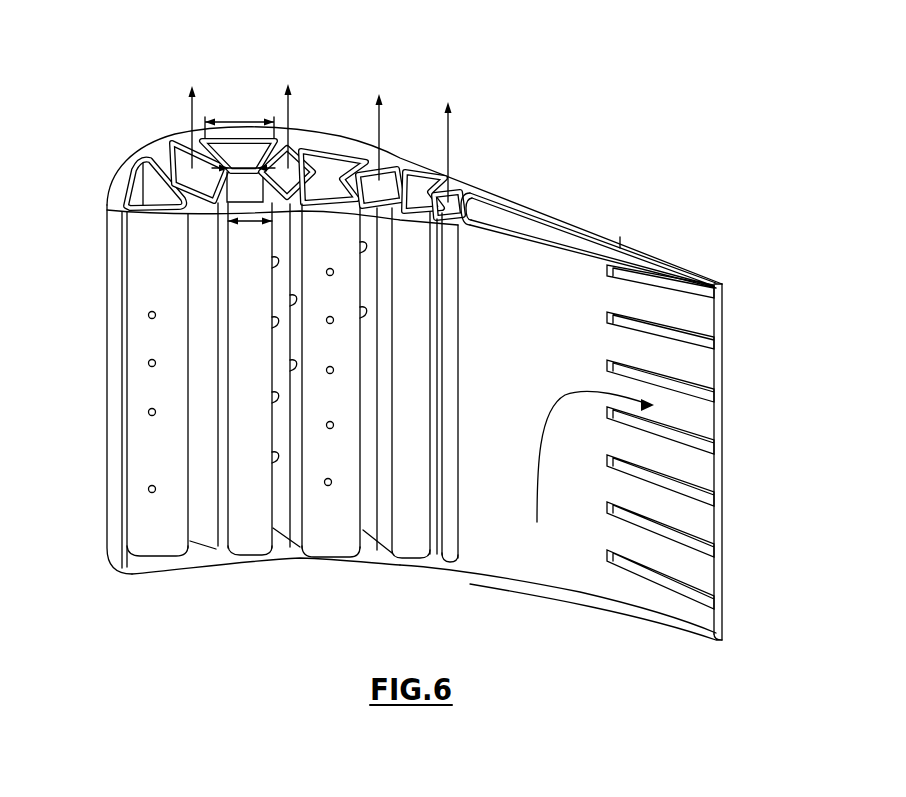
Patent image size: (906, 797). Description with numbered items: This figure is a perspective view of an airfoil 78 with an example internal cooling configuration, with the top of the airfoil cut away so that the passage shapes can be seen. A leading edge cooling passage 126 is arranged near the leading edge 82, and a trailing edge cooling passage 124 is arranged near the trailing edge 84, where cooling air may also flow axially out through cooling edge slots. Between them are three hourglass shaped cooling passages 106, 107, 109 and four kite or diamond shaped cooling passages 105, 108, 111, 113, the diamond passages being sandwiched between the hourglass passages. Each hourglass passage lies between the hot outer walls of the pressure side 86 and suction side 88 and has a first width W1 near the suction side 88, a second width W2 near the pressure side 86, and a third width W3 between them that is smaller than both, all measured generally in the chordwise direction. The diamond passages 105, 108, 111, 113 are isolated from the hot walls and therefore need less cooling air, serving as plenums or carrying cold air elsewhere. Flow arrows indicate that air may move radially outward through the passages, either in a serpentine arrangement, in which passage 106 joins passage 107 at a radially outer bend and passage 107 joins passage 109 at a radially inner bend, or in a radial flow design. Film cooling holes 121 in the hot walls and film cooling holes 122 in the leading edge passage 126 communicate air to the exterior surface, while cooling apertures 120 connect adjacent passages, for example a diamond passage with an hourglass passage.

The airfoil 78 is at (650, 162).
The leading edge 82 is at (107, 328).
The trailing edge 84 is at (714, 338).
The pressure side 86 is at (306, 562).
The suction side 88 is at (370, 186).
The diamond shaped cooling passage 105 is at (172, 145).
The hourglass shaped cooling passage 106 is at (258, 145).
The hourglass shaped cooling passage 107 is at (330, 160).
The diamond shaped cooling passage 108 is at (298, 163).
The hourglass shaped cooling passage 109 is at (430, 175).
The diamond shaped cooling passage 111 is at (393, 180).
The diamond shaped cooling passage 113 is at (459, 192).
The cooling apertures 120 is at (276, 458).
The film cooling holes 121 is at (327, 487).
The film cooling holes 122 is at (149, 363).
The trailing edge cooling passage 124 is at (567, 563).
The leading edge cooling passage 126 is at (154, 552).
The first width W1 is at (237, 122).
The second width W2 is at (240, 221).
The third width W3 is at (238, 170).